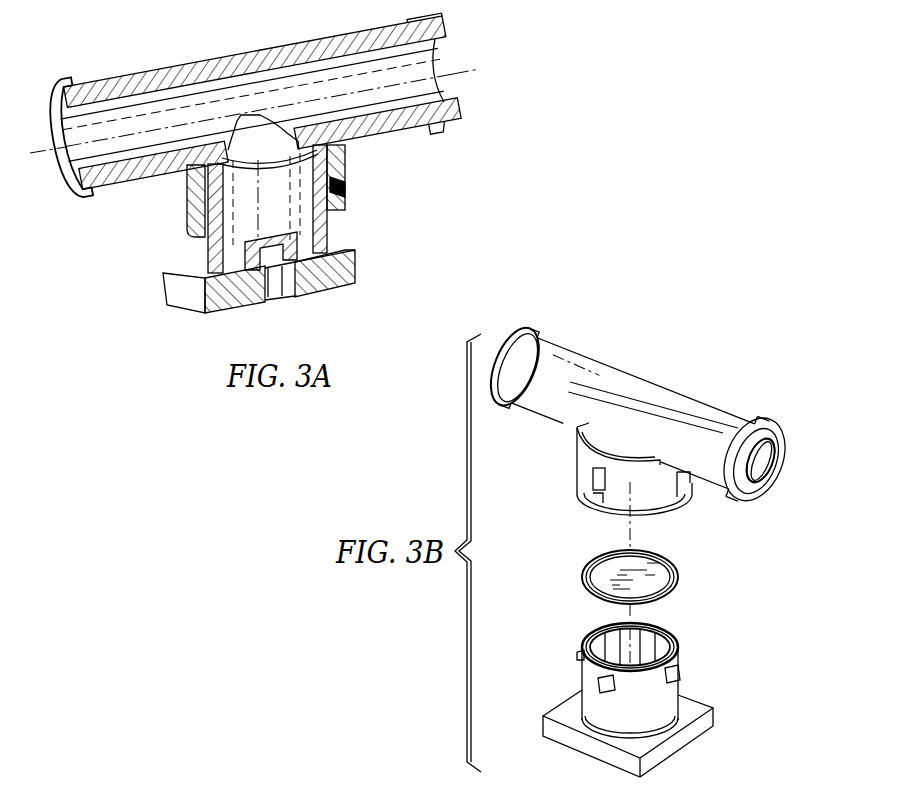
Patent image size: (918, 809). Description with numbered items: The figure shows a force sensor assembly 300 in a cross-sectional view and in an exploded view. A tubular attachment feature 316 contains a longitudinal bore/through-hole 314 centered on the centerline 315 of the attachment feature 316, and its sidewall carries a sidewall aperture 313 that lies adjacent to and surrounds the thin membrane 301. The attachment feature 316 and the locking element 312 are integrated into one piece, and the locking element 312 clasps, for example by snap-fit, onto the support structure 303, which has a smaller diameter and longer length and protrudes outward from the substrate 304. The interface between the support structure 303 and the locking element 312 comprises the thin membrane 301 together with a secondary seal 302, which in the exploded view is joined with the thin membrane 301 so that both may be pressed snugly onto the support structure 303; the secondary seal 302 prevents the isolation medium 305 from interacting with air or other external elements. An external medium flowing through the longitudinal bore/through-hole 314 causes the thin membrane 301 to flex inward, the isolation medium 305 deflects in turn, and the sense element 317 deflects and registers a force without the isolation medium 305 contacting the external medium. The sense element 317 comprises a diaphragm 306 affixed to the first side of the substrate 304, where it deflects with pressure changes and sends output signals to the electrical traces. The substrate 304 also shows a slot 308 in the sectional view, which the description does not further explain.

In FIG. 3A, the force sensor assembly 300 is at (103, 11).
In FIG. 3B, the force sensor assembly 300 is at (705, 334).
In FIG. 3A, the thin membrane 301 is at (268, 147).
In FIG. 3B, the thin membrane 301 is at (670, 593).
In FIG. 3B, the secondary seal 302 is at (588, 558).
In FIG. 3A, the support structure 303 is at (338, 215).
In FIG. 3B, the support structure 303 is at (677, 682).
In FIG. 3A, the substrate 304 is at (162, 283).
In FIG. 3B, the substrate 304 is at (683, 748).
In FIG. 3A, the isolation medium 305 is at (347, 196).
In FIG. 3B, the isolation medium 305 is at (653, 641).
In FIG. 3A, the diaphragm 306 is at (302, 248).
In FIG. 3A, the slot 308 is at (281, 292).
In FIG. 3A, the locking element 312 is at (332, 147).
In FIG. 3B, the locking element 312 is at (657, 512).
In FIG. 3A, the sidewall aperture 313 is at (235, 133).
In FIG. 3A, the longitudinal bore/through-hole 314 is at (437, 45).
In FIG. 3B, the longitudinal bore/through-hole 314 is at (757, 465).
In FIG. 3A, the centerline 315 is at (452, 74).
In FIG. 3A, the attachment feature 316 is at (353, 48).
In FIG. 3B, the attachment feature 316 is at (708, 400).
In FIG. 3A, the sense element 317 is at (228, 253).